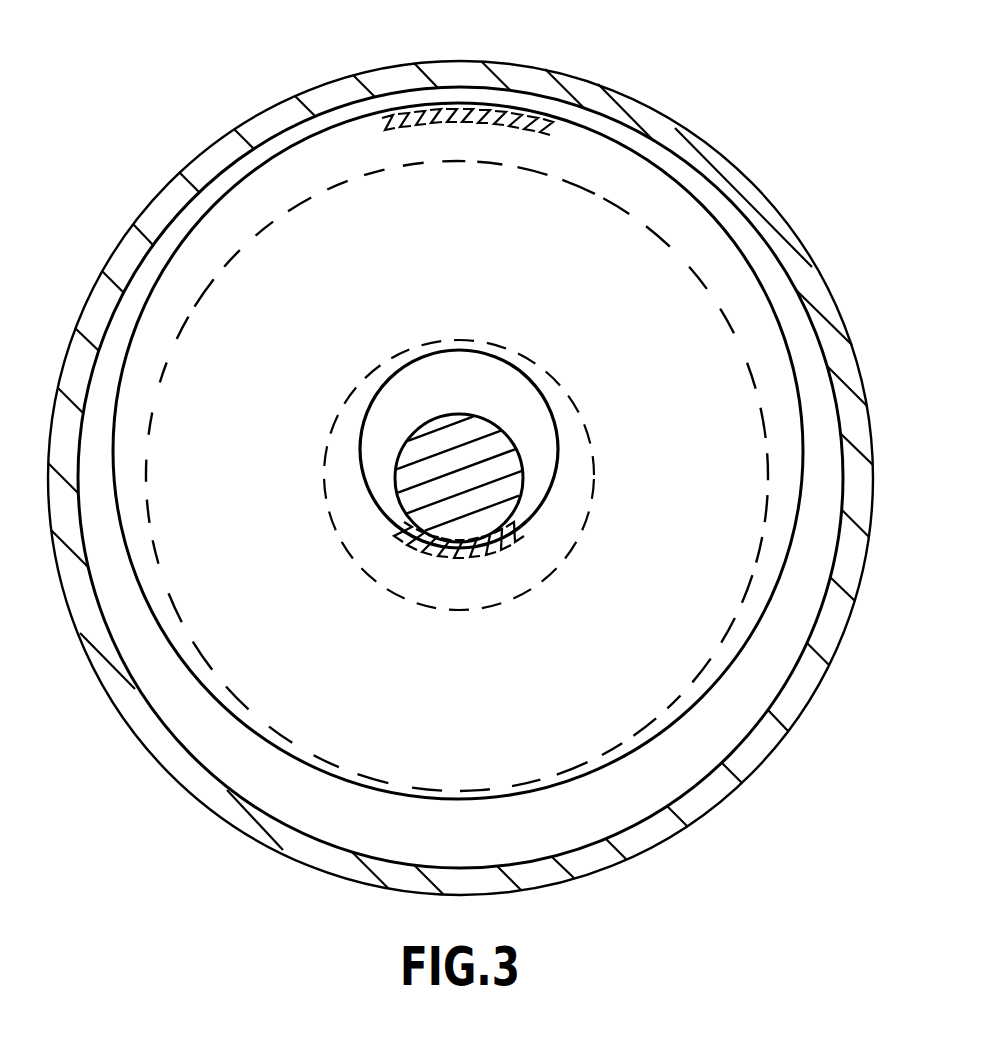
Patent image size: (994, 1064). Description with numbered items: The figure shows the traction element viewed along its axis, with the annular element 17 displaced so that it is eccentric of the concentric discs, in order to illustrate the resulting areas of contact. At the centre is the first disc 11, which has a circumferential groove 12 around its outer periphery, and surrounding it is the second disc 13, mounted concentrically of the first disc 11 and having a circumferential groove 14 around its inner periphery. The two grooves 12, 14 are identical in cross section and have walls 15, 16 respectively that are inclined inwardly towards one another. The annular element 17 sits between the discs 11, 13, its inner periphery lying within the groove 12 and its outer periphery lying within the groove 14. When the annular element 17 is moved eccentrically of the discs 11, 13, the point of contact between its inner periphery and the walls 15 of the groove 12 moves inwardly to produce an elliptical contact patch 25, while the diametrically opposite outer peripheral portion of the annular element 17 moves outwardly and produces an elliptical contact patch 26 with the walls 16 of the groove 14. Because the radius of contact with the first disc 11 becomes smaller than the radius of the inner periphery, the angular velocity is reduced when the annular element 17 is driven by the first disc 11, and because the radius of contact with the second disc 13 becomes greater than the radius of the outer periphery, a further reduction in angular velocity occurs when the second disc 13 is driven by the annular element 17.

The first disc 11 is at (513, 467).
The circumferential groove 12 is at (503, 432).
The second disc 13 is at (667, 142).
The circumferential groove 14 is at (162, 713).
The walls 15 is at (490, 367).
The walls 16 is at (643, 800).
The annular element 17 is at (200, 308).
The elliptical contact patch 25 is at (472, 560).
The elliptical contact patch 26 is at (505, 100).